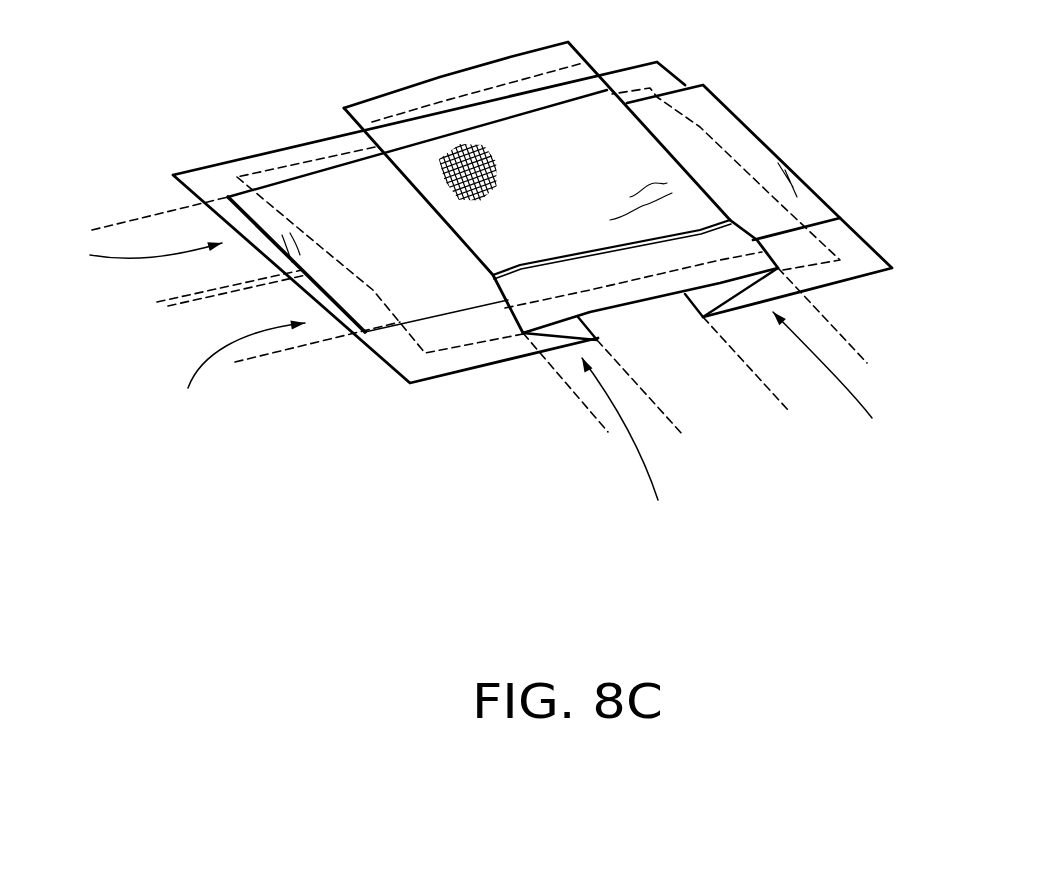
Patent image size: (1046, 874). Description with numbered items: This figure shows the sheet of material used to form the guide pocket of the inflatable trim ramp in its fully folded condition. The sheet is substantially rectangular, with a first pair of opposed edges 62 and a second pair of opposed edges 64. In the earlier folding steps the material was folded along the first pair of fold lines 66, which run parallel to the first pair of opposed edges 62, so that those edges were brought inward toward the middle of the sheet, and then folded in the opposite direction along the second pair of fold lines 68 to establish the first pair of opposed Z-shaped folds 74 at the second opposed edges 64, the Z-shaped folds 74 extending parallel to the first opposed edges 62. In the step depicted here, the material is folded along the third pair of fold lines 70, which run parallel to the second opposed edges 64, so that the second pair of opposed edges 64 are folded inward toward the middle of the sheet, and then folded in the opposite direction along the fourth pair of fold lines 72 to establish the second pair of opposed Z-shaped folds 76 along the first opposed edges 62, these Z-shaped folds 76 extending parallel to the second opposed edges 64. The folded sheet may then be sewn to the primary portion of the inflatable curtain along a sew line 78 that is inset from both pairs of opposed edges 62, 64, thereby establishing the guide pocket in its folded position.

The first pair of opposed edges 62 is at (367, 96).
The second pair of opposed edges 64 is at (402, 380).
The first pair of fold lines 66 is at (122, 222).
The second pair of fold lines 68 is at (177, 297).
The third pair of fold lines 70 is at (597, 418).
The fourth pair of fold lines 72 is at (680, 424).
The first pair of opposed Z-shaped folds 74 is at (182, 323).
The second pair of opposed Z-shaped folds 76 is at (746, 427).
The sew line 78 is at (723, 137).